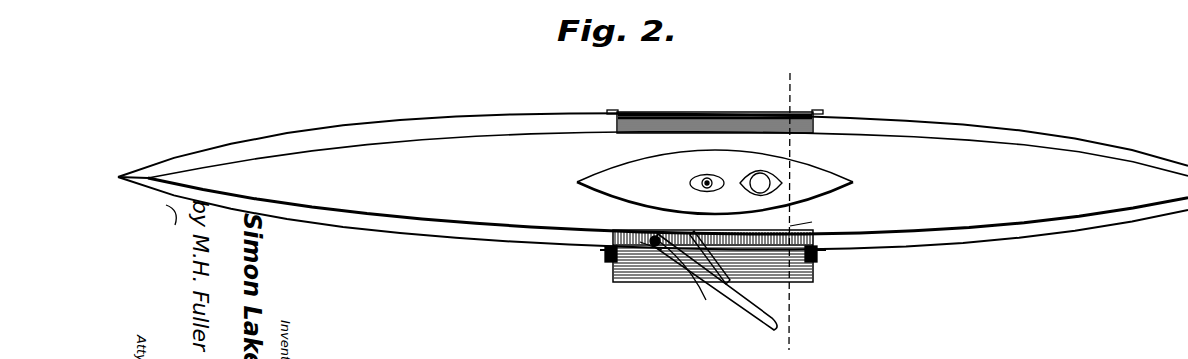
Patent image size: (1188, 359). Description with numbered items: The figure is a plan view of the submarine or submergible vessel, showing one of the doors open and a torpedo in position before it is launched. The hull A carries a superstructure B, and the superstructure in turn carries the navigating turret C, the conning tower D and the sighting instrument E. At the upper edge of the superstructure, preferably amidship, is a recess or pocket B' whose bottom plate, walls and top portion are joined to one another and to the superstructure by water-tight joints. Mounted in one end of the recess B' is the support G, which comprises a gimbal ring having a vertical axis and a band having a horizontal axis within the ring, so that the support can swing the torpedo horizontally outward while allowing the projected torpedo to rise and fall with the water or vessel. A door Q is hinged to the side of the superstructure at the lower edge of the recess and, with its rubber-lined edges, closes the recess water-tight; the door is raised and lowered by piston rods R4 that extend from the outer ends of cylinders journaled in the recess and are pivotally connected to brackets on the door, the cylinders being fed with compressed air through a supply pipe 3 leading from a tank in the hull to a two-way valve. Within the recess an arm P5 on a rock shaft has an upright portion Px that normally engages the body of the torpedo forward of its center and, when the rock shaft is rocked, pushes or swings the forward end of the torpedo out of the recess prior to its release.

The hull A is at (431, 119).
The superstructure B is at (653, 183).
The recess or pocket B' is at (812, 218).
The navigating turret C is at (617, 166).
The conning tower D is at (775, 177).
The sighting instrument E is at (707, 178).
The support G is at (646, 243).
The door Q is at (700, 108).
The piston rod R4 is at (612, 262).
The arm P5 is at (714, 262).
The upright portion Px is at (728, 283).
The supply pipe 3 is at (787, 207).